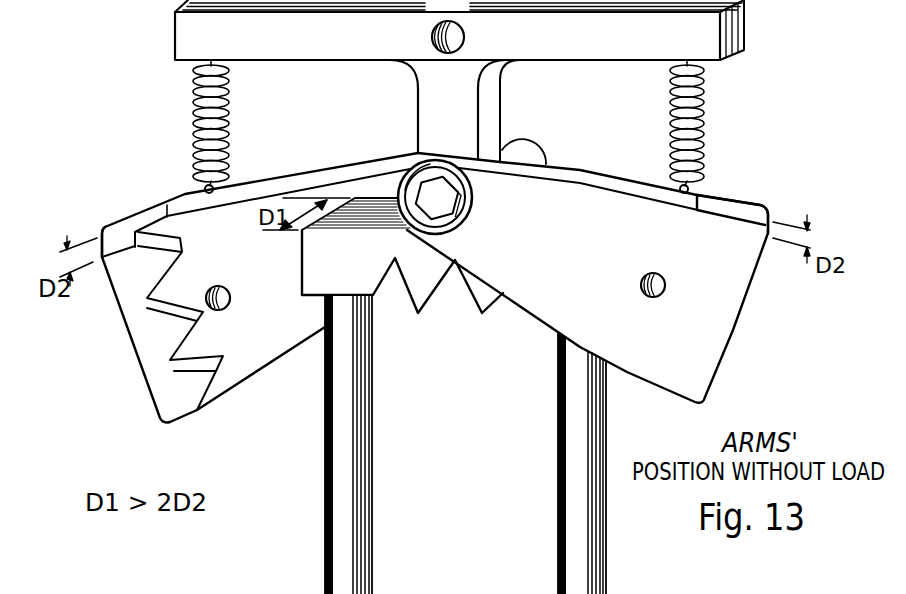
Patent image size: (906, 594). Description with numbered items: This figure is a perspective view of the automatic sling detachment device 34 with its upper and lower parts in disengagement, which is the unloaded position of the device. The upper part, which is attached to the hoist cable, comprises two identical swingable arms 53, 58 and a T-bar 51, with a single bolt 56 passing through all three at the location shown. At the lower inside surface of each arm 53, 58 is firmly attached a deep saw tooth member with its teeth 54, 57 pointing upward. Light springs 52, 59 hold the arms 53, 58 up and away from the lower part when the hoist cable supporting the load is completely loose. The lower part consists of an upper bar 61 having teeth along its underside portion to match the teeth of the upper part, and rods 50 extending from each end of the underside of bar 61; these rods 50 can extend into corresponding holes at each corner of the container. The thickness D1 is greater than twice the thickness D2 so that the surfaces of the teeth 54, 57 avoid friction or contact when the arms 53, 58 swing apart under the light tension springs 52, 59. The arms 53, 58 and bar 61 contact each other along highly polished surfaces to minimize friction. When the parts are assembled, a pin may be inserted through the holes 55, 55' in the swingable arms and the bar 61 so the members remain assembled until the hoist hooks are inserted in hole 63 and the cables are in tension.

The automatic sling detachment device 34 is at (490, 523).
The rod 50 is at (325, 507).
The T-bar 51 is at (175, 38).
The light spring 52 is at (195, 128).
The swingable arm 53 is at (187, 198).
The teeth 54 is at (98, 245).
The hole 55 is at (250, 346).
The hole 55' is at (730, 326).
The bolt 56 is at (422, 185).
The teeth 57 is at (746, 197).
The swingable arm 58 is at (645, 184).
The light spring 59 is at (700, 120).
The upper bar 61 is at (384, 200).
The hole 63 is at (460, 47).